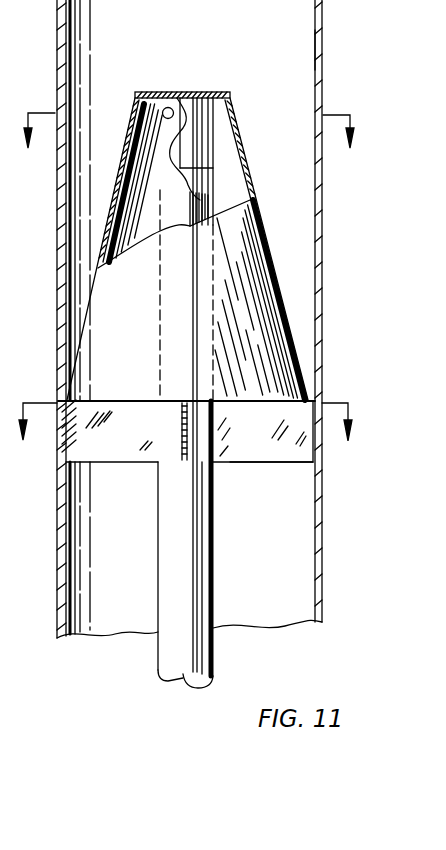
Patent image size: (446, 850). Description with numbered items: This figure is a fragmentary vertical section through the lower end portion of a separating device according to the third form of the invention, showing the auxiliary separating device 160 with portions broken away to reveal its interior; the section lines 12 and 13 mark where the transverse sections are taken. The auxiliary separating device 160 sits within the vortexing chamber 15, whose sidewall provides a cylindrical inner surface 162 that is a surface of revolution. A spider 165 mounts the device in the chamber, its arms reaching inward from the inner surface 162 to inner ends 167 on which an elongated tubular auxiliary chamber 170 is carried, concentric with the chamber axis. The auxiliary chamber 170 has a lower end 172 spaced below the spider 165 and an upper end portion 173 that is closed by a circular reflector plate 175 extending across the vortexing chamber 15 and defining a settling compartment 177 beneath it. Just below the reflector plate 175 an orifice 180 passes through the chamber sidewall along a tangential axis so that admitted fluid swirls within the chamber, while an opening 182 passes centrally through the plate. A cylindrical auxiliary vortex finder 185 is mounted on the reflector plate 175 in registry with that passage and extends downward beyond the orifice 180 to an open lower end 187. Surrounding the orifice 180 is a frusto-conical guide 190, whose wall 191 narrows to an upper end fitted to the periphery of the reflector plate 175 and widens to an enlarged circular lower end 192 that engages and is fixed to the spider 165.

The section line 12- 12 is at (193, 440).
The section line 13- 13 is at (193, 149).
The vortexing chamber 15 is at (323, 61).
The auxiliary separating device 160 is at (286, 244).
The inner surface 162 is at (313, 47).
The spider 165 is at (297, 465).
The inner ends 167 is at (213, 462).
The auxiliary chamber 170 is at (220, 195).
The lower end 172 is at (214, 663).
The upper end portion 173 is at (215, 130).
The reflector plate 175 is at (222, 94).
The settling compartment 177 is at (280, 604).
The orifice 180 is at (164, 109).
The opening 182 is at (190, 92).
The auxiliary vortex finder 185 is at (198, 125).
The lower end 187 is at (248, 171).
The frusto-conical guide 190 is at (131, 359).
The cone wall 191 is at (134, 101).
The lower end 192 is at (286, 402).